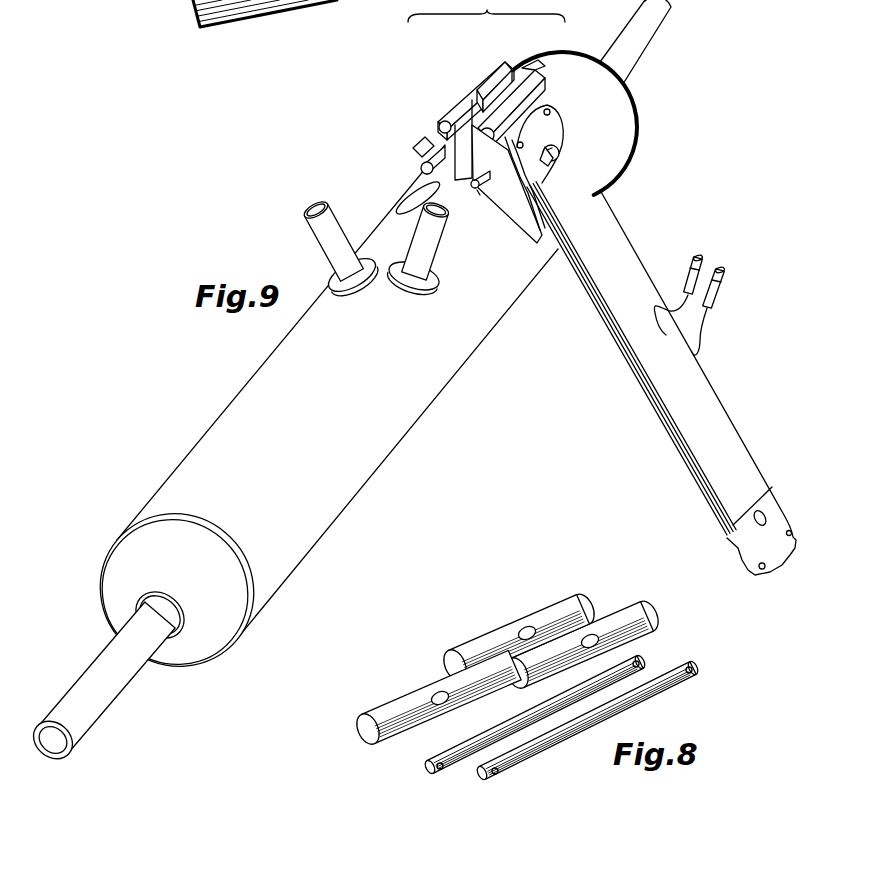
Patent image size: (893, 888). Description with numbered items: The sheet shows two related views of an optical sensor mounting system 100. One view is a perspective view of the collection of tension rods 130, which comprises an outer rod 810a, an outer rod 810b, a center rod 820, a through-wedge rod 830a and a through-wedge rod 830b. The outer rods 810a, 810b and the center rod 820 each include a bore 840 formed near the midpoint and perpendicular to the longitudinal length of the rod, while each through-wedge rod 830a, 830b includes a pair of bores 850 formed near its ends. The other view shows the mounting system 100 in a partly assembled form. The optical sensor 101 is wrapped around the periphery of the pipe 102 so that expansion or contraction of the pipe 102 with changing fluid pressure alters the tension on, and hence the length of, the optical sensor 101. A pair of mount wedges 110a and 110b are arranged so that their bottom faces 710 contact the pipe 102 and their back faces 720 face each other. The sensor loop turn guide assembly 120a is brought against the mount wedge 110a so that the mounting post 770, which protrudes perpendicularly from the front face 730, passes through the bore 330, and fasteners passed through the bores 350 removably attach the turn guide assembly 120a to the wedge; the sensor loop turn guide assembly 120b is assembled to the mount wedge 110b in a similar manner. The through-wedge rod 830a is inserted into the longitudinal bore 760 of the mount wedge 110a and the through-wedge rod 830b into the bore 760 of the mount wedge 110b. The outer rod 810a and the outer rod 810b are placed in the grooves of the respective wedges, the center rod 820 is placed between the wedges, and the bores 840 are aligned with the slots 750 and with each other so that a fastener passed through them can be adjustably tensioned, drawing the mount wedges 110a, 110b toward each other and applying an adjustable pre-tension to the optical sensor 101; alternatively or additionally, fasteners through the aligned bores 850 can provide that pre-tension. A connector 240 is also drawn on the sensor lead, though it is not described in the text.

In FIG. 9, the optical sensor mounting system 100 is at (486, 11).
In FIG. 9, the optical sensor 101 is at (727, 450).
In FIG. 9, the pipe 102 is at (348, 485).
In FIG. 9, the mount wedge 110a is at (523, 62).
In FIG. 9, the mount wedge 110b is at (495, 62).
In FIG. 9, the sensor loop turn guide assembly 120a is at (562, 142).
In FIG. 9, the sensor loop turn guide assembly 120b is at (420, 148).
In FIG. 8, the tension rods 130 is at (458, 604).
In FIG. 9, the connector 240 is at (713, 263).
In FIG. 9, the bore 330 is at (572, 192).
In FIG. 9, the bores 350 is at (524, 143).
In FIG. 9, the bottom face 710 is at (400, 197).
In FIG. 9, the back face 720 is at (468, 182).
In FIG. 9, the front face 730 is at (548, 240).
In FIG. 9, the slot 750 is at (477, 90).
In FIG. 9, the longitudinal bore 760 is at (443, 137).
In FIG. 9, the mounting post 770 is at (563, 155).
In FIG. 8, the outer rod 810a is at (650, 612).
In FIG. 8, the outer rod 810b is at (587, 604).
In FIG. 8, the center rod 820 is at (390, 708).
In FIG. 9, the through-wedge rod 830a is at (477, 193).
In FIG. 8, the through-wedge rod 830a is at (478, 776).
In FIG. 9, the through-wedge rod 830b is at (400, 210).
In FIG. 8, the through-wedge rod 830b is at (425, 768).
In FIG. 9, the bore 840 is at (453, 117).
In FIG. 8, the bore 840 is at (438, 690).
In FIG. 8, the bores 850 is at (640, 664).